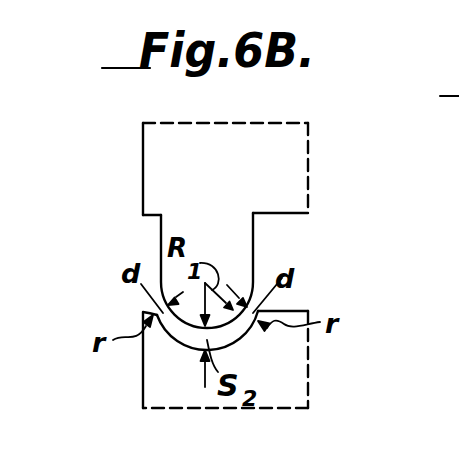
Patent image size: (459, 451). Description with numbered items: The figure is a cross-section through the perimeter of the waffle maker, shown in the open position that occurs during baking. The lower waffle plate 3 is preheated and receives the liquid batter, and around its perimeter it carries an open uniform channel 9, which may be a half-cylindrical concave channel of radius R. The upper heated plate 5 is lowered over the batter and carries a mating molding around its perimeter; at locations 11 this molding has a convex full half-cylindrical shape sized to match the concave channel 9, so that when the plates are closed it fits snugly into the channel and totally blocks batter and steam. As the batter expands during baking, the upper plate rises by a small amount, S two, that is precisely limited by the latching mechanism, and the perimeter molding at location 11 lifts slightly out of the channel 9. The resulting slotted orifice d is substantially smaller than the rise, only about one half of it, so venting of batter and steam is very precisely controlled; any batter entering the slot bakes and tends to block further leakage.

The lower waffle plate 3 is at (211, 360).
The upper heated plate 5 is at (293, 167).
The uniform channel 9 is at (176, 343).
The upper molding locations 11 is at (242, 238).